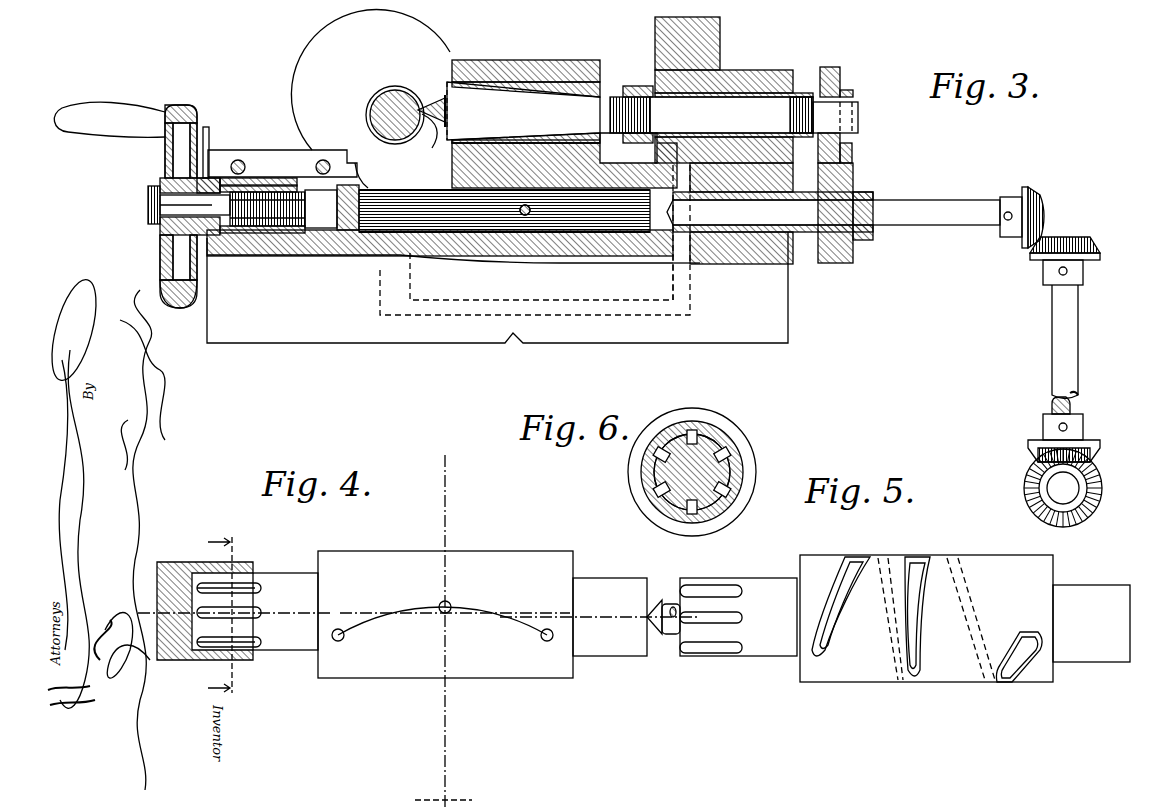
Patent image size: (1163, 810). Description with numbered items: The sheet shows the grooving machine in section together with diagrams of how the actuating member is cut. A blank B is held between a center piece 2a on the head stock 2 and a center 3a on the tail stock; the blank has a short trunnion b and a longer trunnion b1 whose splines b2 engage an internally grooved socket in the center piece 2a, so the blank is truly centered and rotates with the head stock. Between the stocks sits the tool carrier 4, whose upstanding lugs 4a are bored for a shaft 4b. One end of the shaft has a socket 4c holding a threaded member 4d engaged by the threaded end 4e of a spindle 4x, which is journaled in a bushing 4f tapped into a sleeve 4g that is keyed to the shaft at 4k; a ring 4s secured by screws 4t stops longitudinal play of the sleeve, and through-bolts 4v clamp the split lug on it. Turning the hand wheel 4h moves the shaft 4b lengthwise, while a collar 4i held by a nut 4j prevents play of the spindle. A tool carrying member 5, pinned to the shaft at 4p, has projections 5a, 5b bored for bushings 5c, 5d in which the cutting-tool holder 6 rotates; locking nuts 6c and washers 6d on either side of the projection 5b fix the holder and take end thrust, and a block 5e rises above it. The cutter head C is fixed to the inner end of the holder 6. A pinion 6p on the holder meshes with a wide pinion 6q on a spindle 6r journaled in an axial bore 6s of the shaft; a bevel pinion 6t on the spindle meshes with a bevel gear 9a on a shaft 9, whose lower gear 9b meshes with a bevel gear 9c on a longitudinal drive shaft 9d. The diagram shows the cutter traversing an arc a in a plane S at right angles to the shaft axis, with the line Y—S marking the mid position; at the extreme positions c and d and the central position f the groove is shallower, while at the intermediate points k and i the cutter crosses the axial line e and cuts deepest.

In FIG. 3, the head stock 2 is at (323, 72).
In FIG. 4, the center piece 2a is at (178, 580).
In FIG. 6, the center piece 2a is at (648, 476).
In FIG. 3, the blank B is at (395, 100).
In FIG. 4, the blank B is at (560, 567).
In FIG. 5, the blank B is at (1040, 572).
In FIG. 6, the blank B is at (733, 435).
In FIG. 3, the cutter head C is at (427, 133).
In FIG. 3, the tool carrier 4 is at (607, 325).
In FIG. 3, the upstanding lugs 4a is at (288, 160).
In FIG. 3, the shaft 4b is at (395, 222).
In FIG. 3, the socket 4c is at (323, 218).
In FIG. 3, the threaded member 4d is at (262, 226).
In FIG. 3, the threaded end 4e is at (285, 226).
In FIG. 3, the bushing 4f is at (213, 185).
In FIG. 3, the sleeve 4g is at (250, 180).
In FIG. 3, the hand wheel 4h is at (190, 108).
In FIG. 3, the collar 4i is at (180, 242).
In FIG. 3, the nut 4j is at (152, 188).
In FIG. 3, the key 4k is at (275, 230).
In FIG. 3, the pin 4p is at (527, 216).
In FIG. 3, the ring 4s is at (206, 150).
In FIG. 3, the screws 4t is at (200, 172).
In FIG. 3, the through-bolts 4v is at (240, 160).
In FIG. 3, the spindle 4x is at (208, 205).
In FIG. 3, the tool carrying member 5 is at (468, 250).
In FIG. 3, the projection 5a is at (560, 68).
In FIG. 3, the projection 5b is at (775, 70).
In FIG. 3, the bushing 5c is at (528, 82).
In FIG. 3, the bushing 5d is at (742, 92).
In FIG. 3, the upright block 5e is at (713, 26).
In FIG. 3, the cutting-tool holder 6 is at (876, 108).
In FIG. 4, the cutting-tool holder 6 is at (228, 616).
In FIG. 3, the locking nuts 6c is at (625, 90).
In FIG. 3, the washers 6d is at (641, 90).
In FIG. 3, the pinion 6p is at (842, 155).
In FIG. 3, the pinion 6q is at (838, 190).
In FIG. 3, the spindle 6r is at (907, 212).
In FIG. 3, the axial bore 6s is at (745, 215).
In FIG. 3, the bevel pinion 6t is at (1042, 203).
In FIG. 3, the shaft 9 is at (1066, 340).
In FIG. 3, the bevel gear 9a is at (1092, 248).
In FIG. 3, the gear 9b is at (1092, 448).
In FIG. 3, the bevel gear 9c is at (1102, 488).
In FIG. 3, the shaft 9d is at (1058, 488).
In FIG. 5, the center 3a is at (662, 635).
In FIG. 4, the arc a is at (333, 636).
In FIG. 5, the trunnion b is at (608, 588).
In FIG. 4, the trunnion b1 is at (288, 640).
In FIG. 5, the trunnion b1 is at (781, 650).
In FIG. 4, the splines b2 is at (245, 600).
In FIG. 5, the splines b2 is at (720, 633).
In FIG. 6, the splines b2 is at (730, 493).
In FIG. 4, the extreme cutter position c is at (336, 641).
In FIG. 4, the extreme cutter position d is at (545, 641).
In FIG. 4, the axial line e is at (354, 613).
In FIG. 5, the axial line e is at (600, 609).
In FIG. 4, the central cutter position f is at (447, 605).
In FIG. 4, the intermediate cutter position i is at (502, 615).
In FIG. 4, the intermediate cutter position k is at (388, 615).
In FIG. 4, the line Y—S Y is at (454, 632).
In FIG. 4, the rocker shaft axis S is at (447, 798).